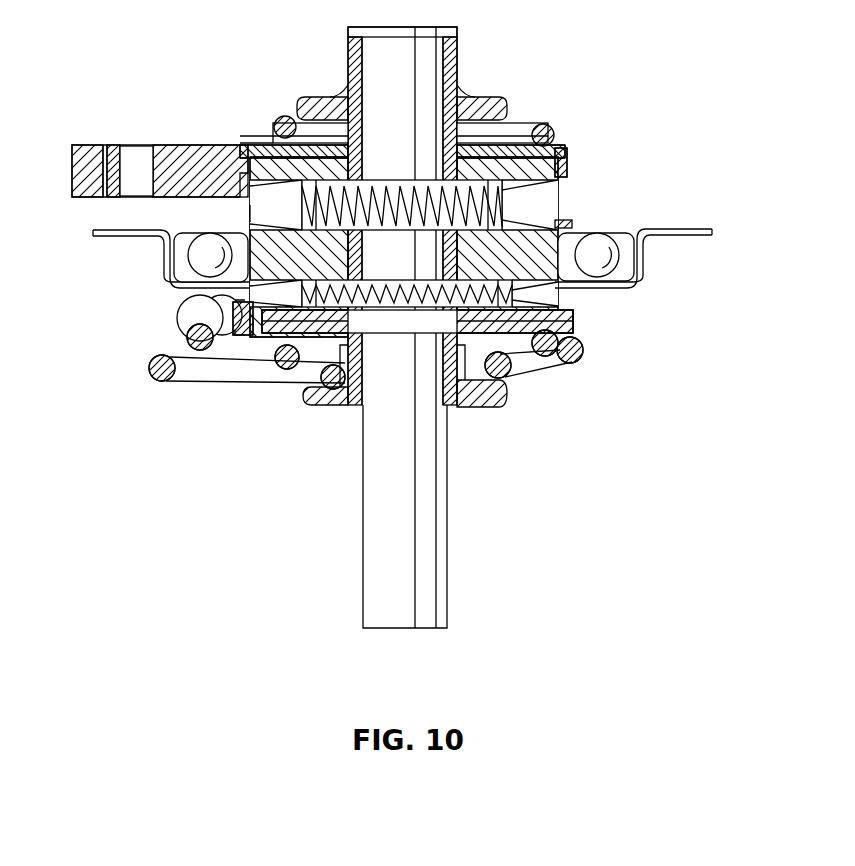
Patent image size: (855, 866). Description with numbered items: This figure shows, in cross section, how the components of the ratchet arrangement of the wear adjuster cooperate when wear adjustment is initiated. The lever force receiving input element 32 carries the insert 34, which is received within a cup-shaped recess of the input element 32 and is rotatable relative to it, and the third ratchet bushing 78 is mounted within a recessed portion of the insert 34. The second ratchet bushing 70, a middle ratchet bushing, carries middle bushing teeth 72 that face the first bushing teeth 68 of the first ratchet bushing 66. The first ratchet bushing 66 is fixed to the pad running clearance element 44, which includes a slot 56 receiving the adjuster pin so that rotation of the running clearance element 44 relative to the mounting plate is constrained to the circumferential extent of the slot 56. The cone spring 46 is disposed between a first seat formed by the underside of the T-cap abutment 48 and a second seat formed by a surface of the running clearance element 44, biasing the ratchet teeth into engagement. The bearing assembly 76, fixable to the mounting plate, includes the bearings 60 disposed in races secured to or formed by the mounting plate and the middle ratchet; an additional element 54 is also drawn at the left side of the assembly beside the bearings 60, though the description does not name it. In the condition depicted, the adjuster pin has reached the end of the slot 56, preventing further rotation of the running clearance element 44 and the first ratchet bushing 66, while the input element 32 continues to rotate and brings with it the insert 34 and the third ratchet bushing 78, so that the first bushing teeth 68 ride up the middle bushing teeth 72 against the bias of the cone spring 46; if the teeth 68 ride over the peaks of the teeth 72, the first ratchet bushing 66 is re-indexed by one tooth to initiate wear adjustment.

The lever force receiving input element 32 is at (572, 320).
The insert 34 is at (562, 303).
The pad running clearance element 44 is at (203, 143).
The cone spring 46 is at (532, 122).
The T-cap abutment 48 is at (478, 98).
The cable 54 is at (177, 323).
The slot 56 is at (138, 153).
The bearings 60 is at (203, 253).
The first ratchet bushing 66 is at (567, 148).
The first bushing teeth 68 is at (503, 192).
The second ratchet bushing 70 is at (570, 226).
The middle bushing teeth 72 is at (250, 213).
The bearing assembly 76 is at (630, 257).
The third ratchet bushing 78 is at (262, 315).